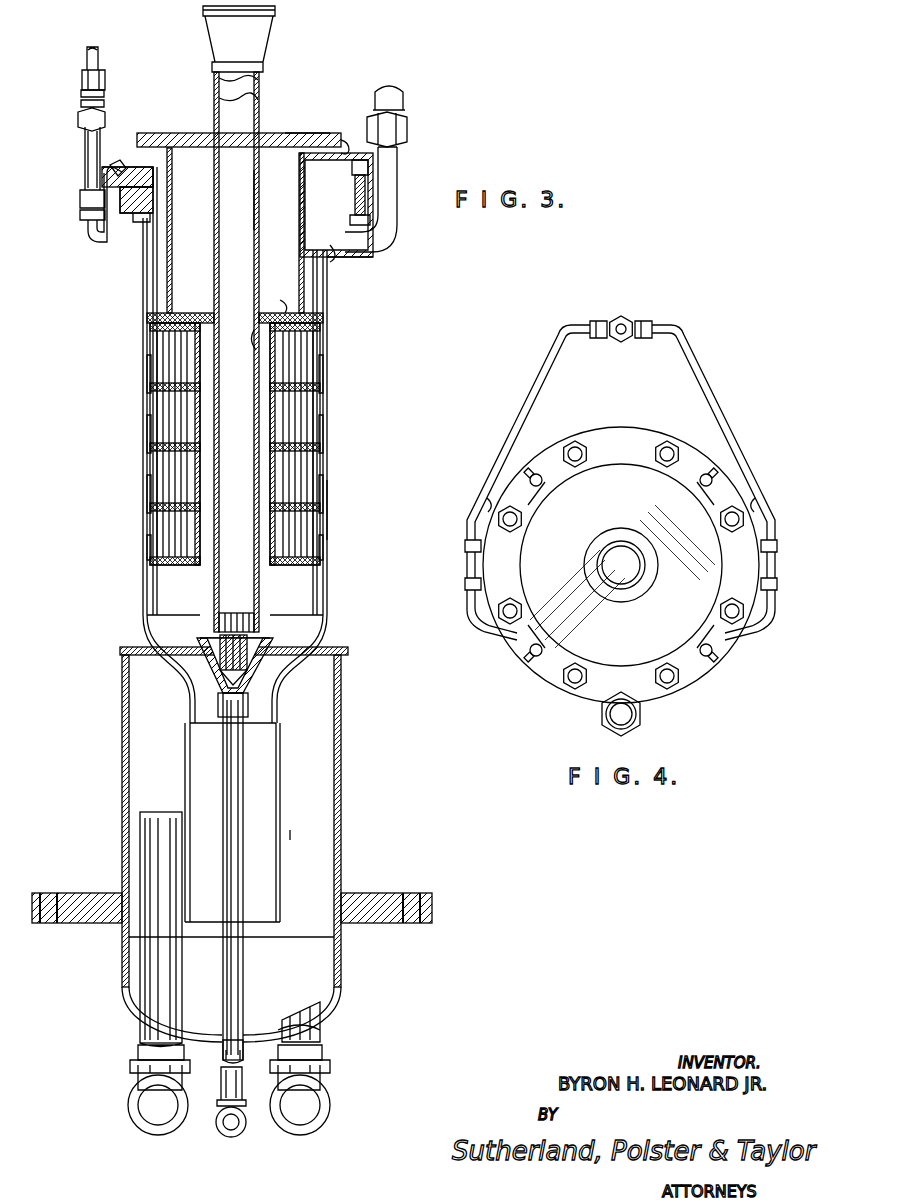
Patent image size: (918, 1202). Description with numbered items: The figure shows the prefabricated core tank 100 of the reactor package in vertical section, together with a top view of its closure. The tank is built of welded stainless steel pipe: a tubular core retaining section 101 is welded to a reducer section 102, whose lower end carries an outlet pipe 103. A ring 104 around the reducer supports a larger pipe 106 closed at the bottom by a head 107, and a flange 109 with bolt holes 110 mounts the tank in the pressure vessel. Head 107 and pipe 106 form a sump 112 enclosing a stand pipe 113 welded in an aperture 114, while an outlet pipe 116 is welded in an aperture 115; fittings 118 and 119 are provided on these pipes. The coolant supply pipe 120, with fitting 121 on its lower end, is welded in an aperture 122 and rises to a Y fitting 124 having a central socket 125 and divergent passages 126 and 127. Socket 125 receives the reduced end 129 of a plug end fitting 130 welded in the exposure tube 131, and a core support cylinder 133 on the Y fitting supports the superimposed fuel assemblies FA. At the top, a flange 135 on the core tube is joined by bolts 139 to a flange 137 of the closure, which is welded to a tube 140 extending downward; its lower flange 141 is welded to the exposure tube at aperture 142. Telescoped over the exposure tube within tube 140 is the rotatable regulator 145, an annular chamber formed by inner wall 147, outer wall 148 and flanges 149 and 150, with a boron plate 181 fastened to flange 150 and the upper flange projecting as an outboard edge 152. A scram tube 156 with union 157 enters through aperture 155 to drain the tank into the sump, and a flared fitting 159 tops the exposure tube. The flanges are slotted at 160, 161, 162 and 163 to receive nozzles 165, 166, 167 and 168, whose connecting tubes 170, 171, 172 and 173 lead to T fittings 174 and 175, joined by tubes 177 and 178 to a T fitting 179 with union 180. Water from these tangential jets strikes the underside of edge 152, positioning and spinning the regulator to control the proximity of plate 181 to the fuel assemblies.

In FIG. 3, the core tank 100 is at (343, 511).
In FIG. 3, the tubular core retaining section 101 is at (330, 472).
In FIG. 3, the reducer section 102 is at (330, 634).
In FIG. 3, the outlet pipe 103 is at (281, 796).
In FIG. 3, the ring 104 is at (350, 650).
In FIG. 3, the pipe 106 is at (343, 763).
In FIG. 3, the head 107 is at (340, 975).
In FIG. 3, the flange 109 is at (372, 889).
In FIG. 3, the bolt holes 110 is at (420, 918).
In FIG. 3, the sump 112 is at (322, 837).
In FIG. 3, the stand pipe 113 is at (168, 968).
In FIG. 3, the aperture 114 is at (178, 1032).
In FIG. 3, the aperture 115 is at (282, 1032).
In FIG. 3, the outlet pipe 116 is at (300, 1008).
In FIG. 3, the fitting 118 is at (130, 1085).
In FIG. 3, the fitting 119 is at (330, 1085).
In FIG. 3, the coolant supply pipe 120 is at (245, 950).
In FIG. 3, the fitting 121 is at (244, 1118).
In FIG. 3, the aperture 122 is at (240, 1046).
In FIG. 3, the Y fitting 124 is at (252, 706).
In FIG. 3, the central socket 125 is at (228, 676).
In FIG. 3, the divergent passage 126 is at (218, 652).
In FIG. 3, the divergent passage 127 is at (262, 652).
In FIG. 3, the reduced end 129 is at (203, 646).
In FIG. 3, the plug end fitting 130 is at (236, 611).
In FIG. 3, the exposure tube 131 is at (262, 106).
In FIG. 3, the core support cylinder 133 is at (274, 624).
In FIG. 3, the flange 135 is at (375, 197).
In FIG. 3, the flange 137 is at (378, 173).
In FIG. 4, the flange 137 is at (636, 438).
In FIG. 3, the bolts 139 is at (370, 184).
In FIG. 4, the bolts 139 is at (575, 448).
In FIG. 3, the tube 140 is at (322, 279).
In FIG. 3, the flange 141 is at (326, 321).
In FIG. 3, the aperture 142 is at (254, 346).
In FIG. 3, the rotatable regulator 145 is at (282, 126).
In FIG. 3, the inner cylindrical wall 147 is at (259, 202).
In FIG. 3, the outer cylindrical wall 148 is at (301, 226).
In FIG. 3, the upper flange 149 is at (298, 132).
In FIG. 3, the lower flange 150 is at (170, 310).
In FIG. 3, the outboard edge 152 is at (345, 138).
In FIG. 3, the aperture 155 is at (332, 260).
In FIG. 3, the scram tube 156 is at (395, 225).
In FIG. 3, the union 157 is at (408, 97).
In FIG. 3, the fitting 159 is at (268, 24).
In FIG. 4, the slot 160 is at (712, 472).
In FIG. 4, the slot 161 is at (712, 664).
In FIG. 4, the slot 162 is at (528, 657).
In FIG. 4, the slot 163 is at (530, 472).
In FIG. 4, the nozzle 165 is at (700, 486).
In FIG. 4, the nozzle 166 is at (702, 648).
In FIG. 4, the nozzle 167 is at (548, 650).
In FIG. 4, the nozzle 168 is at (542, 490).
In FIG. 4, the connecting tube 170 is at (752, 500).
In FIG. 4, the connecting tube 171 is at (760, 626).
In FIG. 4, the connecting tube 172 is at (480, 618).
In FIG. 4, the connecting tube 173 is at (490, 500).
In FIG. 4, the T fitting 174 is at (778, 558).
In FIG. 4, the T fitting 175 is at (465, 558).
In FIG. 3, the tube 177 is at (84, 162).
In FIG. 4, the tube 177 is at (720, 390).
In FIG. 4, the tube 178 is at (520, 393).
In FIG. 3, the T fitting 179 is at (80, 115).
In FIG. 4, the T fitting 179 is at (646, 319).
In FIG. 3, the union 180 is at (81, 80).
In FIG. 4, the union 180 is at (626, 306).
In FIG. 3, the plate 181 is at (283, 302).
In FIG. 3, the fuel assemblies FA is at (157, 354).